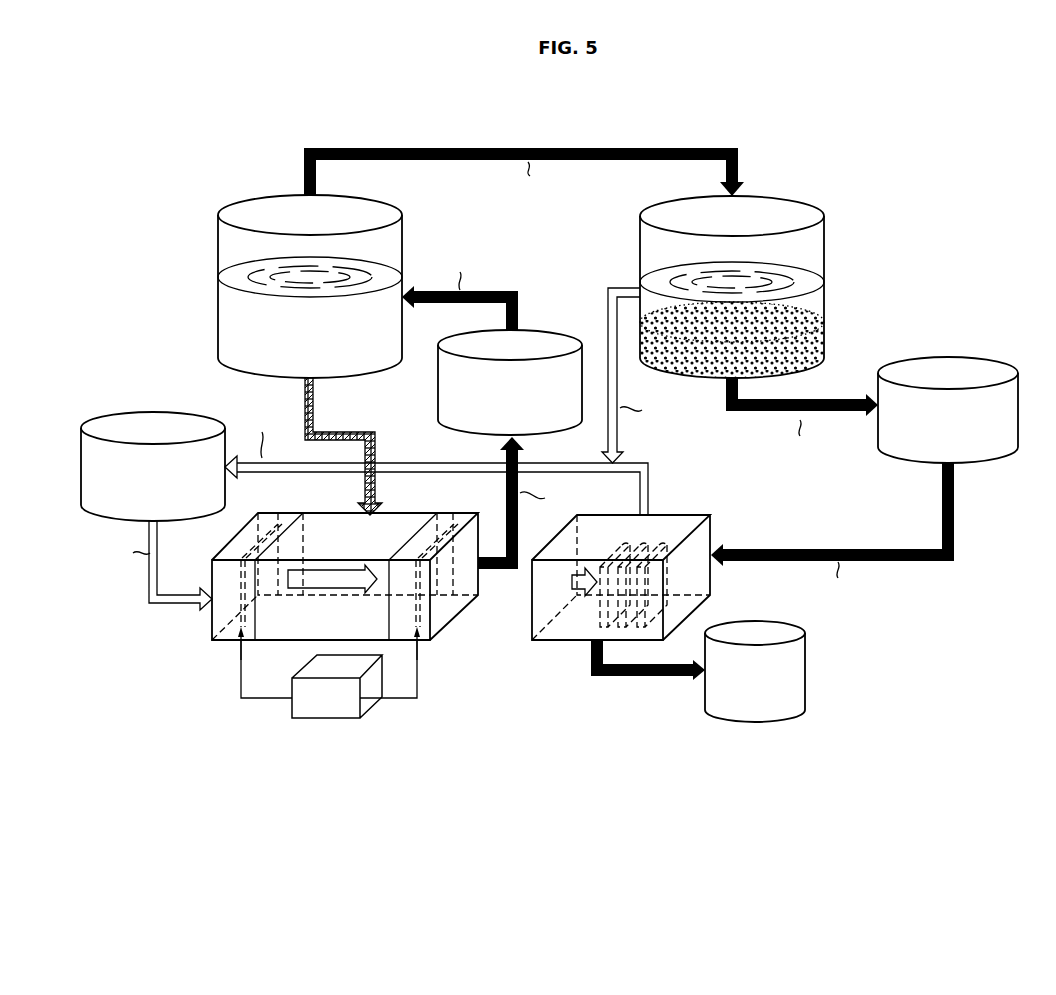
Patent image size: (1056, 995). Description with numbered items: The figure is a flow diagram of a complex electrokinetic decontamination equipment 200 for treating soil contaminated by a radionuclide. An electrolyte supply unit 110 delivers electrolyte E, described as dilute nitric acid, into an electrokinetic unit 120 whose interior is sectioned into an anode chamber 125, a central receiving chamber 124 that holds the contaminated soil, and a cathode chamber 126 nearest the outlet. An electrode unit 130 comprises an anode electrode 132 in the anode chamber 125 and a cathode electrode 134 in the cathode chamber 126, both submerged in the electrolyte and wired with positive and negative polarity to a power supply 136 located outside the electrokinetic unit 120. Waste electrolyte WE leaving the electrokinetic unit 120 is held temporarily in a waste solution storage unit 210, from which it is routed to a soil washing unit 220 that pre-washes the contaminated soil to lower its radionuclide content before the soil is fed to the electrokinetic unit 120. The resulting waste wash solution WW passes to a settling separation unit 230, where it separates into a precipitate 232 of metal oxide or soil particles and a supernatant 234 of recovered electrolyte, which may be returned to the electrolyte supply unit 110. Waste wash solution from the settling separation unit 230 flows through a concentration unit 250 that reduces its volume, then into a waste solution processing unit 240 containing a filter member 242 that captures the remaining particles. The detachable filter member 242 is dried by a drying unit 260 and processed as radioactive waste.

The complex electrokinetic decontamination equipment 200 is at (522, 132).
The electrolyte supply unit 110 is at (140, 412).
The electrokinetic unit 120 is at (444, 645).
The receiving chamber 124 is at (392, 527).
The anode chamber 125 is at (274, 527).
The cathode chamber 126 is at (447, 527).
The electrode unit 130 is at (280, 720).
The anode electrode 132 is at (240, 600).
The cathode electrode 134 is at (440, 597).
The power supply 136 is at (323, 718).
The waste solution storage unit 210 is at (532, 330).
The soil washing unit 220 is at (273, 195).
The settling separation unit 230 is at (792, 196).
The precipitate 232 is at (808, 345).
The supernatant 234 is at (808, 300).
The waste solution processing unit 240 is at (567, 650).
The filter member 242 is at (658, 535).
The concentration unit 250 is at (961, 357).
The drying unit 260 is at (810, 665).